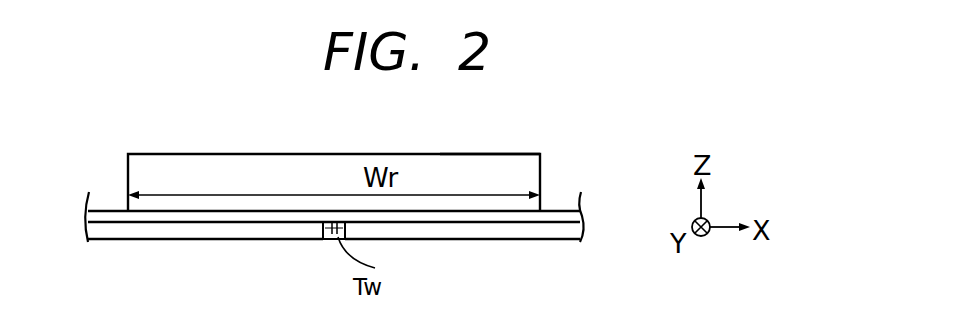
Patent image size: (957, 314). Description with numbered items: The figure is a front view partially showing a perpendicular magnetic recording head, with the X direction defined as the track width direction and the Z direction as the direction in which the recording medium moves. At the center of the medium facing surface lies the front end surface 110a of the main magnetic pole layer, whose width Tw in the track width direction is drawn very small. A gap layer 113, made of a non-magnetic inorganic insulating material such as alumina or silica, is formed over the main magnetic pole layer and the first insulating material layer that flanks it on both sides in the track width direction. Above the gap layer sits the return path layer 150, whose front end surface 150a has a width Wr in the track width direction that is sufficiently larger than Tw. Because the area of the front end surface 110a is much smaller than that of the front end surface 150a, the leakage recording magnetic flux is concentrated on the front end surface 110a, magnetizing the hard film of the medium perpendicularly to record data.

The return path layer 150 is at (339, 176).
The front end surface of the return path layer 150a is at (470, 162).
The gap layer 113 is at (583, 215).
The front end surface of the main magnetic pole layer 110a is at (332, 237).